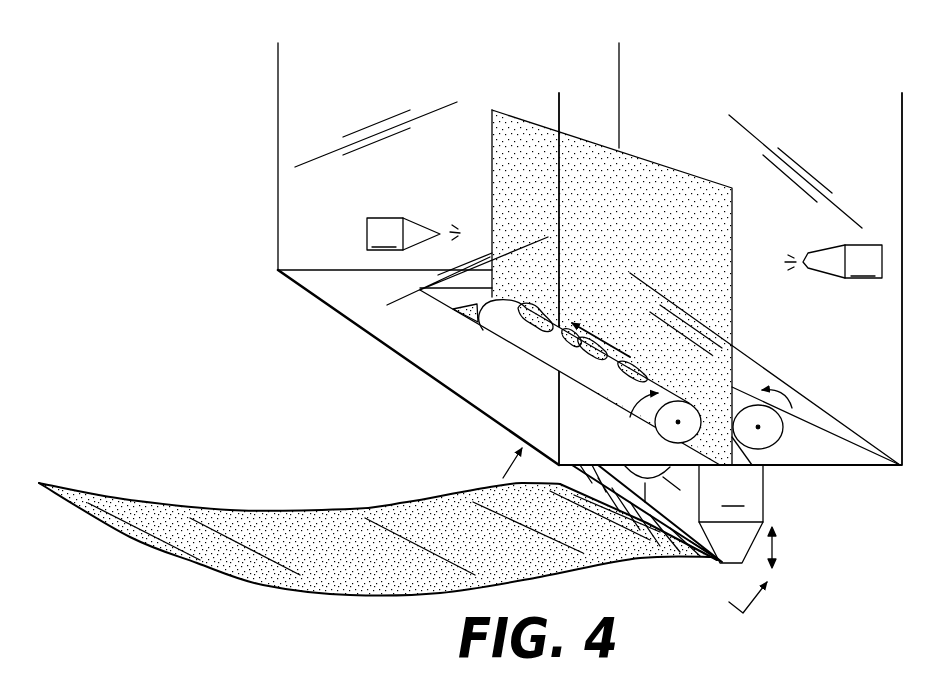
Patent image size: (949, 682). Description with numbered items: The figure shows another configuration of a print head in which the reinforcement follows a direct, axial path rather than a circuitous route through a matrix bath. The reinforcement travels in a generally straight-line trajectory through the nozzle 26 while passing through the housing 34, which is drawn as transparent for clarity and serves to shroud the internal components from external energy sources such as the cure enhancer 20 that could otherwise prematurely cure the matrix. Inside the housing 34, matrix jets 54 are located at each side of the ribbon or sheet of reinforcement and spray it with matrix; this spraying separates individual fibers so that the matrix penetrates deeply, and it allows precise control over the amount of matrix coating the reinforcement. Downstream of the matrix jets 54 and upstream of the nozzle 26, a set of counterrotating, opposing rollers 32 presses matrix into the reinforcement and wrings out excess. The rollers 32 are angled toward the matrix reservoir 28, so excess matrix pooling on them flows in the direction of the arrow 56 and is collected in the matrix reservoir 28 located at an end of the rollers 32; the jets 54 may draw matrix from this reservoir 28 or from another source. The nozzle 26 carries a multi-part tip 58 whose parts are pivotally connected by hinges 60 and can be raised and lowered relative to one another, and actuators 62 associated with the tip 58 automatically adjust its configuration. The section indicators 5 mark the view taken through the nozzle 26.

The section view direction arrows 5 is at (629, 539).
The cure enhancer 20 is at (652, 468).
The nozzle 26 is at (731, 514).
The matrix reservoir 28 is at (478, 314).
The rollers 32 is at (770, 430).
The housing 34 is at (278, 229).
The matrix jet 54 is at (624, 248).
The arrow 56 is at (602, 334).
The tip 58 is at (710, 552).
The hinges 60 is at (681, 540).
The actuators 62 is at (775, 548).